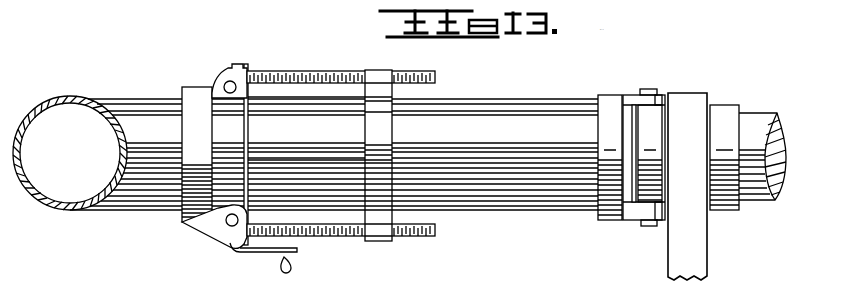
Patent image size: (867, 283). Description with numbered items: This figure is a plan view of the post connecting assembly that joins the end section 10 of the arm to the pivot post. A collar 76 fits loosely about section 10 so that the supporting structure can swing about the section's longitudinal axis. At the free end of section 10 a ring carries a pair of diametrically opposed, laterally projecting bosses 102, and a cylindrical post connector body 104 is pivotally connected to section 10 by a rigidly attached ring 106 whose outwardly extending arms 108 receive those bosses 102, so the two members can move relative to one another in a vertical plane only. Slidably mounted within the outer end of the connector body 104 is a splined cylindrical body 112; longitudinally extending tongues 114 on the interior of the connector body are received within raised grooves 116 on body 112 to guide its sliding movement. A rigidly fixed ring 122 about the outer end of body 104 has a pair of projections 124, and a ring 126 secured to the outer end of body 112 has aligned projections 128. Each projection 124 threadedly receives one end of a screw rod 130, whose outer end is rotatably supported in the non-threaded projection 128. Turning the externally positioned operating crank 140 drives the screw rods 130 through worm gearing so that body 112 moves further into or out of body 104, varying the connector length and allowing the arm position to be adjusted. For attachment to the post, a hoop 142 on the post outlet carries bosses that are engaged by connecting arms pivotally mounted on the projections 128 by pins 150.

The end section 10 is at (757, 112).
The collar 76 is at (678, 93).
The bosses 102 is at (640, 89).
The post connector body 104 is at (517, 99).
The ring 106 is at (598, 95).
The arms 108 is at (633, 95).
The splined cylindrical body 112 is at (270, 112).
The tongues 114 is at (128, 189).
The raised grooves 116 is at (308, 160).
The ring 122 is at (365, 97).
The projections 124 is at (385, 70).
The ring 126 is at (433, 237).
The projections 128 is at (222, 78).
The screw rod 130 is at (288, 71).
The operating crank 140 is at (258, 253).
The hoop 142 is at (182, 222).
The pins 150 is at (218, 86).